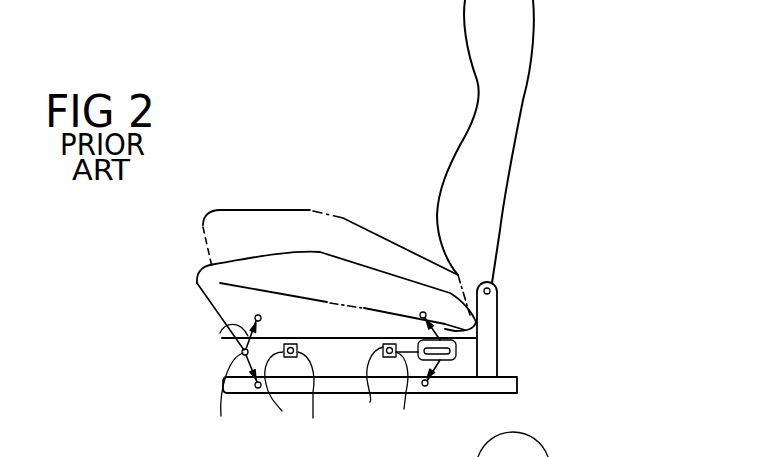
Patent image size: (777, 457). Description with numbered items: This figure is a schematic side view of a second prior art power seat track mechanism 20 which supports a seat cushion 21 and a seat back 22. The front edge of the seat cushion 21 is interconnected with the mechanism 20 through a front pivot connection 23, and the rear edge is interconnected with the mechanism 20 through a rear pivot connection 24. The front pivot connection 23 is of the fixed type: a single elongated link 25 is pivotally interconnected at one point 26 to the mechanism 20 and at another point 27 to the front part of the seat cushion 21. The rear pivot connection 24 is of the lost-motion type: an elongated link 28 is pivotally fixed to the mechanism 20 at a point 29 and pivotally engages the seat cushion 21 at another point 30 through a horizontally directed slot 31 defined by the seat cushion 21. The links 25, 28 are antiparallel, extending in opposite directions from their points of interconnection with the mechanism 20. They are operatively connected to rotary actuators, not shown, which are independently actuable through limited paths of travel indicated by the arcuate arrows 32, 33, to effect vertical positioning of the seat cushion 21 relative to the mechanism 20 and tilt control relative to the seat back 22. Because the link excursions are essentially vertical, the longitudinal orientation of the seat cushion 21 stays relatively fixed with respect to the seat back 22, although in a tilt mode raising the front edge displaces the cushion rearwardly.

The power seat track mechanism 20 is at (540, 344).
The seat cushion 21 is at (205, 292).
The seat back 22 is at (510, 100).
The front pivot connection 23 is at (204, 369).
The rear pivot connection 24 is at (485, 388).
The link 25 is at (284, 397).
The pivot point 26 is at (316, 396).
The pivot point 27 is at (234, 381).
The elongated link 28 is at (404, 391).
The pivot point 29 is at (368, 389).
The pivot point 30 is at (447, 360).
The horizontally directed slot 31 is at (456, 350).
The arcuate arrow 32 is at (220, 333).
The arcuate arrow 33 is at (466, 330).